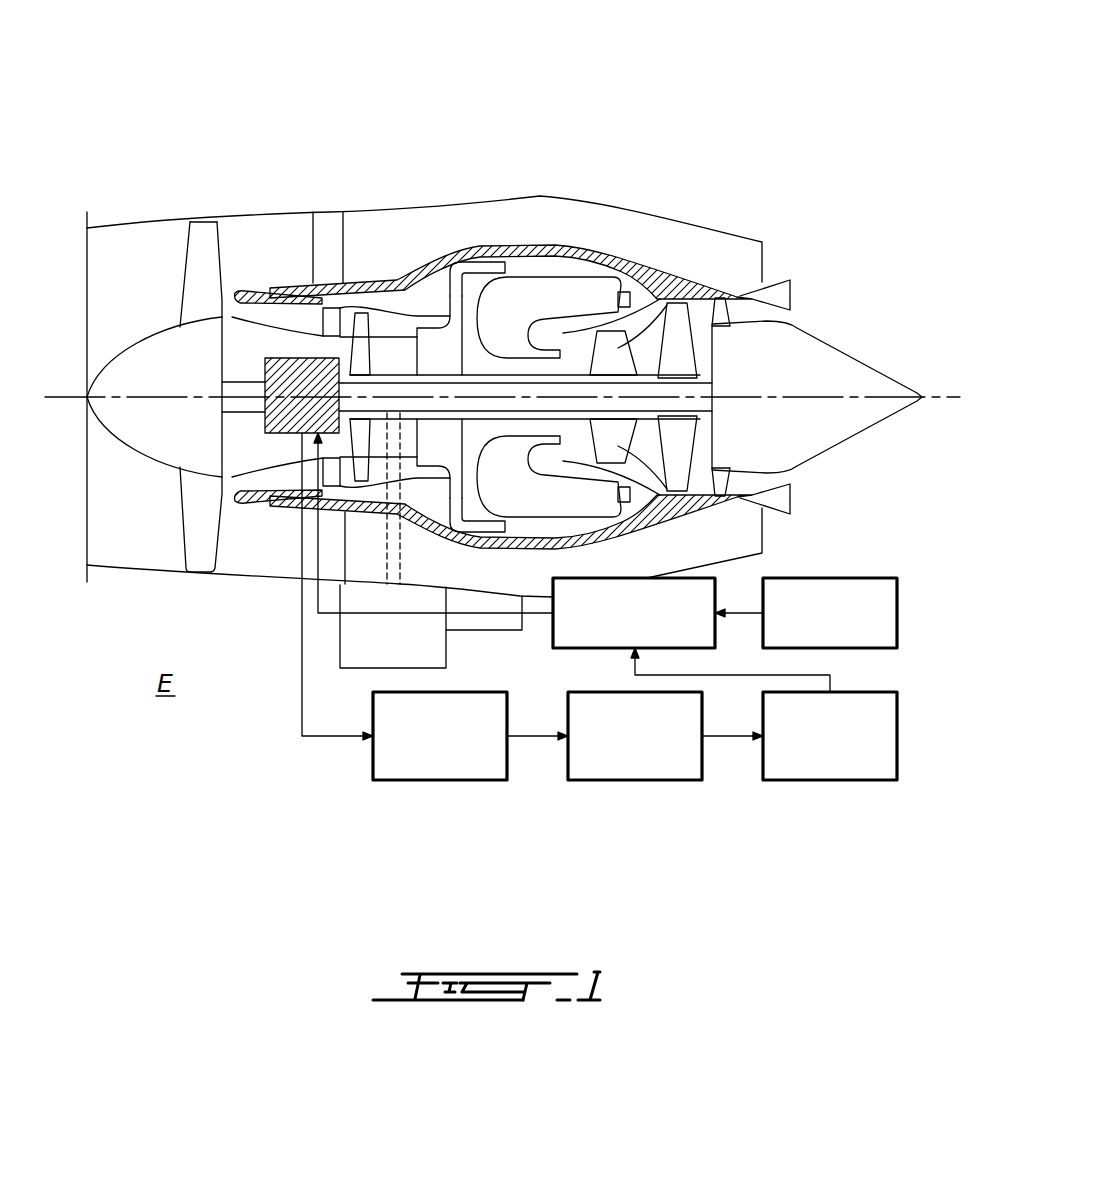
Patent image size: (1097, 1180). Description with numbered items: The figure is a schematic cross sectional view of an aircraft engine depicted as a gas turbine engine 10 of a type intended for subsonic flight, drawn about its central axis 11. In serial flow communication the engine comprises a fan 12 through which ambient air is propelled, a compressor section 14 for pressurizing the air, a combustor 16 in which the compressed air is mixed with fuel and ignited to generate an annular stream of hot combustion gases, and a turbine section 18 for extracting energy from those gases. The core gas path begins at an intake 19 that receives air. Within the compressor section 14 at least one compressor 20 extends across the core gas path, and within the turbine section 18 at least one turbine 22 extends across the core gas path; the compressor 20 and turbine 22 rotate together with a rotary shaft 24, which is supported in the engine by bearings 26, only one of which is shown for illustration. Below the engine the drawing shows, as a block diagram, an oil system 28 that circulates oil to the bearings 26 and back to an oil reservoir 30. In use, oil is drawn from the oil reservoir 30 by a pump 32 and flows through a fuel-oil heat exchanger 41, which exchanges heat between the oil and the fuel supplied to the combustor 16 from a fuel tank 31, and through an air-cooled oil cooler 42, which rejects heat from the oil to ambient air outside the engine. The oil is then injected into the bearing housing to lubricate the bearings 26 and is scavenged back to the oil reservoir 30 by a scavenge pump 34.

The gas turbine engine 10 is at (686, 134).
The central longitudinal axis 11 is at (938, 393).
The fan 12 is at (188, 505).
The compressor section 14 is at (386, 323).
The combustor 16 is at (548, 292).
The turbine section 18 is at (645, 443).
The intake 19 is at (102, 258).
The compressor 20 is at (358, 326).
The turbine 22 is at (613, 347).
The rotary shaft 24 is at (403, 340).
The bearings 26 is at (302, 357).
The oil system 28 is at (558, 815).
The oil reservoir 30 is at (635, 782).
The fuel tank 31 is at (830, 577).
The pump 32 is at (830, 782).
The scavenge pump 34 is at (437, 782).
The fuel-oil heat exchanger 41 is at (551, 637).
The air-cooled oil cooler 42 is at (538, 525).